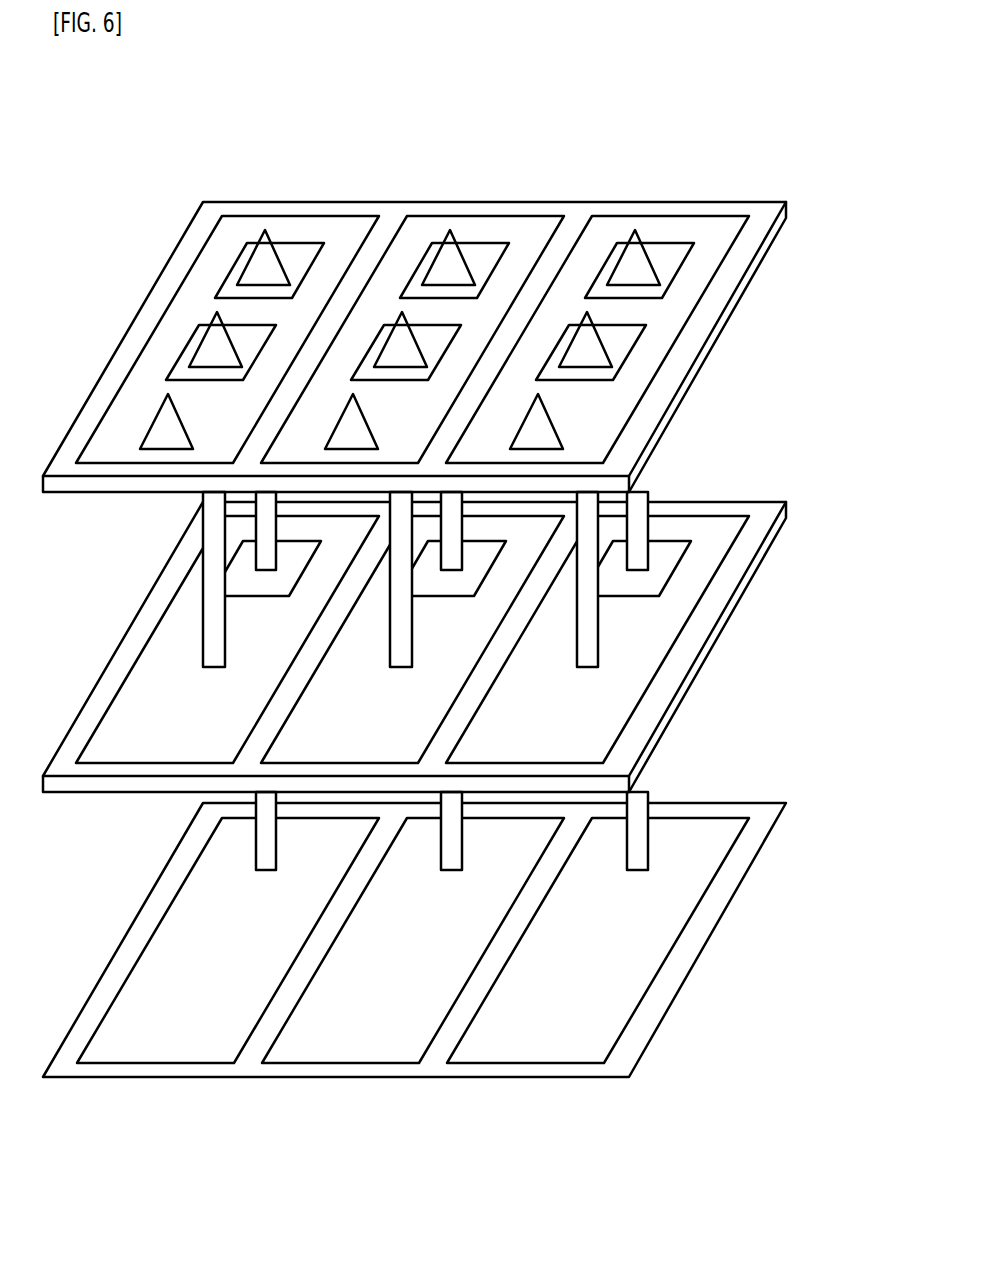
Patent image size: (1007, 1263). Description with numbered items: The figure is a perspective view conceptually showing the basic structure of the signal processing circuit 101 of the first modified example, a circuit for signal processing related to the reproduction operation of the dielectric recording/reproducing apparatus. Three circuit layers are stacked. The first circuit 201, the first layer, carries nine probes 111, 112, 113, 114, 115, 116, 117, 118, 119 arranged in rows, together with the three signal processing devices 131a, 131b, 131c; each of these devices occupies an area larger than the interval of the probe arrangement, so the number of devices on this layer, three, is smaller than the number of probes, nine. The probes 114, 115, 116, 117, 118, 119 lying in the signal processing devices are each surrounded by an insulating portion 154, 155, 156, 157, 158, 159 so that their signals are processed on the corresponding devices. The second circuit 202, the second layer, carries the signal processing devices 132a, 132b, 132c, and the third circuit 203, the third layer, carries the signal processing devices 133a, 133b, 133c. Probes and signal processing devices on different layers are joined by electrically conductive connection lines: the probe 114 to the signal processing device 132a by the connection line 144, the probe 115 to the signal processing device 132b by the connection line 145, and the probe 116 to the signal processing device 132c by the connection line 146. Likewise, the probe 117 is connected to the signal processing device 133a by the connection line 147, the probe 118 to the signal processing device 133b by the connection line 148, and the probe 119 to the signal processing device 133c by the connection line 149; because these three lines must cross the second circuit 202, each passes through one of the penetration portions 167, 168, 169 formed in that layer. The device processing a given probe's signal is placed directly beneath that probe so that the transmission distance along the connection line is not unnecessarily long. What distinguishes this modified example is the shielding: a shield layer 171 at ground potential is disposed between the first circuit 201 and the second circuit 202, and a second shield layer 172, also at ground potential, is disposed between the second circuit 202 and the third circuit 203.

The signal processing circuit 101 is at (110, 131).
The probe 111 is at (163, 428).
The probe 112 is at (362, 433).
The probe 113 is at (560, 425).
The probe 114 is at (217, 353).
The probe 115 is at (402, 347).
The probe 116 is at (578, 347).
The probe 117 is at (263, 268).
The probe 118 is at (455, 265).
The probe 119 is at (628, 277).
The signal processing device 131a is at (224, 228).
The signal processing device 131b is at (450, 228).
The signal processing device 131c is at (651, 226).
The signal processing device 132a is at (177, 637).
The signal processing device 132b is at (330, 710).
The signal processing device 132c is at (593, 735).
The signal processing device 133a is at (178, 933).
The signal processing device 133b is at (332, 1005).
The signal processing device 133c is at (630, 975).
The connection line 144 is at (217, 588).
The connection line 145 is at (402, 652).
The connection line 146 is at (587, 652).
The connection line 147 is at (267, 512).
The connection line 148 is at (450, 527).
The connection line 149 is at (632, 522).
The insulating portion 154 is at (250, 345).
The insulating portion 155 is at (438, 347).
The insulating portion 156 is at (625, 350).
The insulating portion 157 is at (302, 262).
The insulating portion 158 is at (473, 255).
The insulating portion 159 is at (660, 253).
The penetration portion 167 is at (263, 585).
The penetration portion 168 is at (447, 588).
The penetration portion 169 is at (640, 583).
The shield layer 171 is at (702, 370).
The shield layer 172 is at (682, 707).
The first circuit 201 is at (733, 200).
The second circuit 202 is at (737, 497).
The third circuit 203 is at (737, 802).